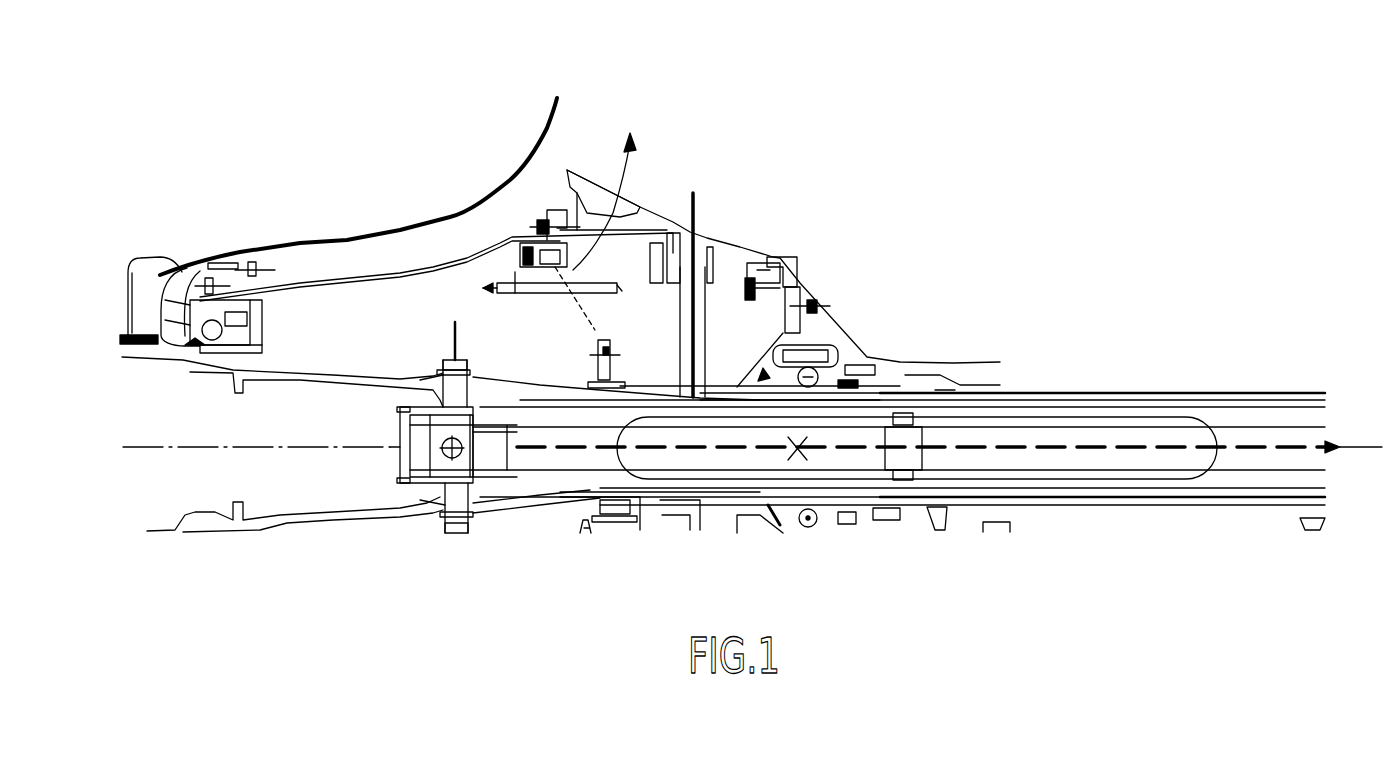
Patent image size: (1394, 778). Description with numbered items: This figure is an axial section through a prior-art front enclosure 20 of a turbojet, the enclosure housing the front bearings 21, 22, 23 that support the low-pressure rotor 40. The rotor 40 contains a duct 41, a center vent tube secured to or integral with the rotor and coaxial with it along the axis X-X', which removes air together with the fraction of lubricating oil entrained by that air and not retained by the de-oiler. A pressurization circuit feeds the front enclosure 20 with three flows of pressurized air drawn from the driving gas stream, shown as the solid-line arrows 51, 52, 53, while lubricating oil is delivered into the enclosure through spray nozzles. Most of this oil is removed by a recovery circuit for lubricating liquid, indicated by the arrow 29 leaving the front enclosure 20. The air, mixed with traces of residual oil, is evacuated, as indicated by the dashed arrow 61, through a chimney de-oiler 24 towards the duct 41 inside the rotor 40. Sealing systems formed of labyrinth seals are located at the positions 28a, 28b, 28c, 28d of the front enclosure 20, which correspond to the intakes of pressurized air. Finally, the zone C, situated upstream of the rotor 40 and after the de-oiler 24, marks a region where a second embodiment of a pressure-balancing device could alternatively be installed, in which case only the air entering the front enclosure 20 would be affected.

The front enclosure 20 is at (347, 334).
The front bearing 21 is at (217, 340).
The front bearing 22 is at (812, 382).
The front bearing 23 is at (590, 385).
The chimney de-oiler 24 is at (467, 363).
The labyrinth seal location 28a is at (185, 280).
The labyrinth seal location 28b is at (677, 357).
The labyrinth seal location 28c is at (740, 380).
The labyrinth seal location 28d is at (947, 363).
The lubricating liquid recovery flow 29 is at (617, 172).
The low-pressure rotor 40 is at (1143, 490).
The duct 41 is at (1057, 465).
The pressurized air flow 51 is at (348, 243).
The pressurized air flow 52 is at (690, 197).
The pressurized air flow 53 is at (897, 367).
The air removal flow 61 is at (447, 322).
The zone C is at (1193, 480).
The axis X is at (170, 449).